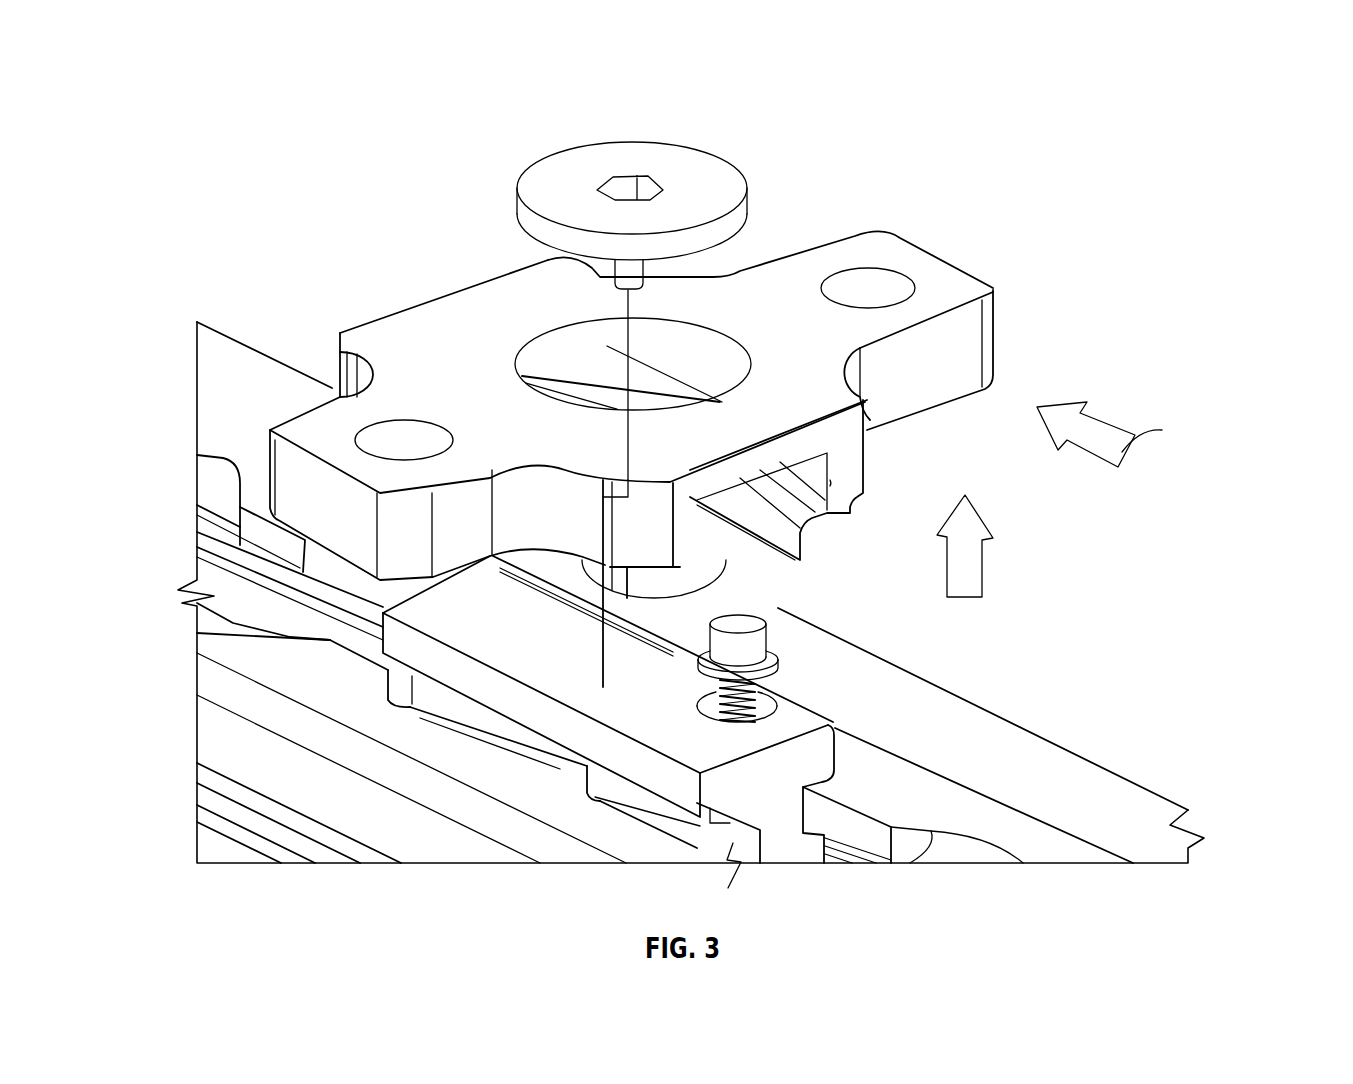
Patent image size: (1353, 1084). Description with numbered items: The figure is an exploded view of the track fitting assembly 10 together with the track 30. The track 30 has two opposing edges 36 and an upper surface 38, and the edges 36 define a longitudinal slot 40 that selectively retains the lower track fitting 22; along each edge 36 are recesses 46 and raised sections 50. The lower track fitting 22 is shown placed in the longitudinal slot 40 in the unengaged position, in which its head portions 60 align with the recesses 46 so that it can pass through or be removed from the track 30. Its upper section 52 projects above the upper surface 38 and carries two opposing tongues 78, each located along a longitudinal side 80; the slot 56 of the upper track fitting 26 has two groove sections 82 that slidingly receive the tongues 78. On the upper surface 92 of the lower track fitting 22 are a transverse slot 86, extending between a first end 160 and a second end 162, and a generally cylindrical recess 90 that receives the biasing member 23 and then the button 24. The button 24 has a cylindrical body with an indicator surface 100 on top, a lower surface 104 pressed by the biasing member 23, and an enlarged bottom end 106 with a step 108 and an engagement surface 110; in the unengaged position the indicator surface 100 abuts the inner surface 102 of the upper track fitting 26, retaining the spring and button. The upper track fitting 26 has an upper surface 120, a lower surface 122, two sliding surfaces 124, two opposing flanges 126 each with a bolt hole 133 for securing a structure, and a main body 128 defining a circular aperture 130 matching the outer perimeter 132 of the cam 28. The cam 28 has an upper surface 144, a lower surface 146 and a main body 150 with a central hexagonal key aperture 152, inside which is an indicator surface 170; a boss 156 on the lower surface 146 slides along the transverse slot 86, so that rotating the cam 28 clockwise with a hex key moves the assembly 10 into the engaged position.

The track fitting assembly 10 is at (918, 168).
The lower track fitting 22 is at (495, 603).
The biasing member 23 is at (770, 688).
The button 24 is at (820, 612).
The upper track fitting 26 is at (425, 312).
The cam 28 is at (650, 146).
The track 30 is at (468, 845).
The opposing edges 36 is at (226, 624).
The upper surface 38 is at (215, 649).
The longitudinal slot 40 is at (218, 573).
The recesses 46 is at (455, 785).
The raised sections 50 is at (470, 758).
The upper section 52 is at (822, 783).
The slot 56 is at (810, 560).
The head portions 60 is at (398, 703).
The tongues 78 is at (742, 842).
The longitudinal side 80 is at (690, 815).
The groove sections 82 is at (858, 490).
The transverse slot 86 is at (723, 767).
The recess 90 is at (812, 773).
The upper surface 92 is at (497, 633).
The indicator surface 100 is at (665, 567).
The inner surface 102 is at (760, 568).
The lower surface 104 is at (722, 700).
The bottom end 106 is at (785, 650).
The step 108 is at (712, 628).
The engagement surface 110 is at (700, 664).
The upper surface 120 is at (507, 283).
The lower surface 122 is at (955, 404).
The sliding surfaces 124 is at (780, 470).
The flanges 126 is at (298, 420).
The main body 128 is at (506, 318).
The aperture 130 is at (700, 330).
The outer perimeter 132 is at (750, 205).
The bolt hole 133 is at (418, 435).
The upper surface 144 is at (700, 170).
The lower surface 146 is at (715, 258).
The main body 150 is at (548, 170).
The key aperture 152 is at (615, 240).
The boss 156 is at (640, 283).
The first end 160 is at (765, 720).
The second end 162 is at (723, 820).
The indicator surface 170 is at (628, 182).